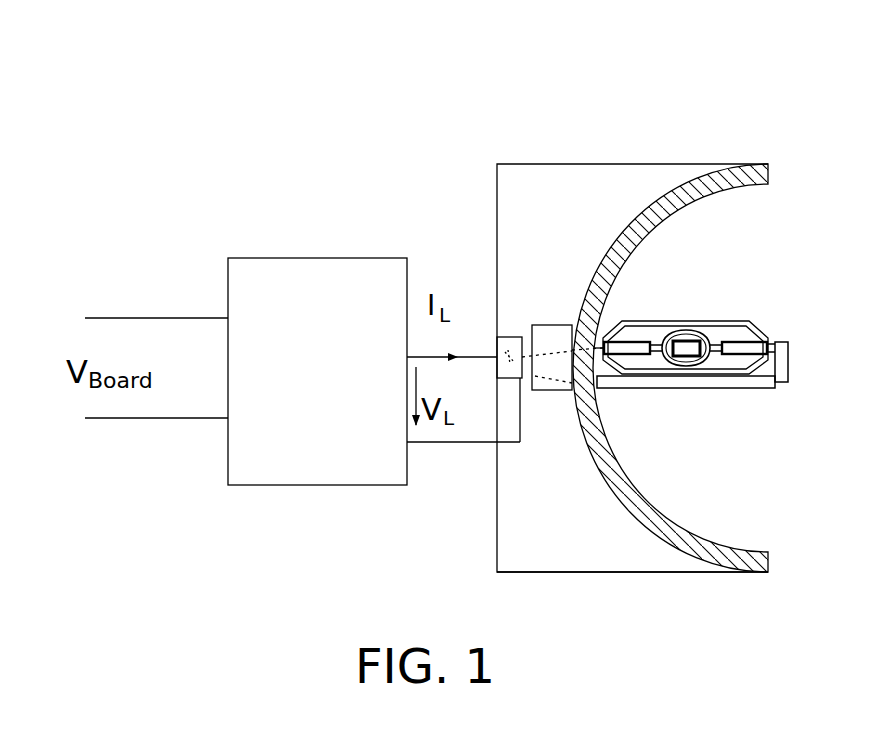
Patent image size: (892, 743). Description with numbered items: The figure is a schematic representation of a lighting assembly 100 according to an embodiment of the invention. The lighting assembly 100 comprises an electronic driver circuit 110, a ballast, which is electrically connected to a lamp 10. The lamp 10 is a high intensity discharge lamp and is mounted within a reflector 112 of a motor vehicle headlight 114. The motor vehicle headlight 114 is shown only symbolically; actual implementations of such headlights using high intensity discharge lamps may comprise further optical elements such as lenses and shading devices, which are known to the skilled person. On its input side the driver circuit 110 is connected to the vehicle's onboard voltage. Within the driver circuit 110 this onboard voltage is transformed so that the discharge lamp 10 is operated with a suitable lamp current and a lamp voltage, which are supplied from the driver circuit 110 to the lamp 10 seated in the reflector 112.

The lighting assembly 100 is at (507, 80).
The electronic driver circuit 110 is at (342, 378).
The reflector 112 is at (688, 185).
The motor vehicle headlight 114 is at (637, 555).
The lamp 10 is at (677, 322).